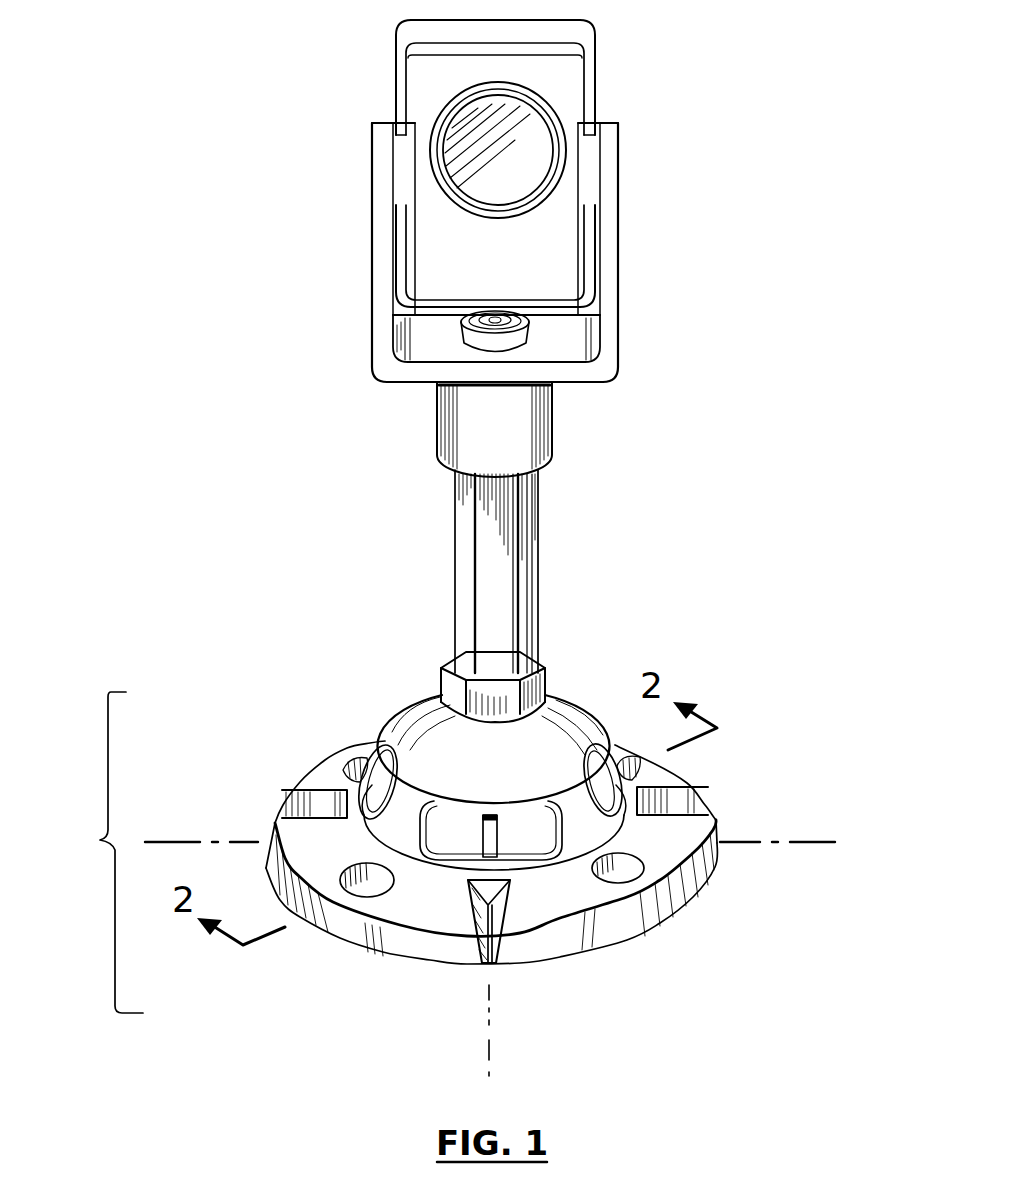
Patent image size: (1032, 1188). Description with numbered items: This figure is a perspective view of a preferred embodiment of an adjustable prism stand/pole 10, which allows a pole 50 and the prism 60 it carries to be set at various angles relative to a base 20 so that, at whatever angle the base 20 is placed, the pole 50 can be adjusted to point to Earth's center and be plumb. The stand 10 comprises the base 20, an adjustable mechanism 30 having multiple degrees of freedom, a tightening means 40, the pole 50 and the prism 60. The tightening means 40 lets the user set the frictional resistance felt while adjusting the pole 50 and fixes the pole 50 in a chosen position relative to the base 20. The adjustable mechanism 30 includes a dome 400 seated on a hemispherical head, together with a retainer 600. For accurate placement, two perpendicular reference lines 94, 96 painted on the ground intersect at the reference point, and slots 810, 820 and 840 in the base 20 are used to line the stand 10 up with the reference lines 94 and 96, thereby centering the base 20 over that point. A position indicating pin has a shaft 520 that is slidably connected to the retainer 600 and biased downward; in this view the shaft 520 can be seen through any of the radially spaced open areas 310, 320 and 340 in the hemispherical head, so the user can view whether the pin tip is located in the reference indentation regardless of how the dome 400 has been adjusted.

The adjustable prism stand/pole 10 is at (784, 285).
The base 20 is at (710, 838).
The adjustable mechanism 30 is at (100, 838).
The tightening means 40 is at (545, 680).
The pole 50 is at (537, 533).
The prism 60 is at (457, 118).
The reference line 94 is at (757, 841).
The reference line 96 is at (490, 1047).
The open area 310 is at (456, 840).
The open area 320 is at (375, 752).
The open area 340 is at (625, 757).
The dome 400 is at (423, 693).
The shaft 520 is at (497, 830).
The retainer 600 is at (480, 812).
The slot 810 is at (512, 925).
The slot 820 is at (290, 794).
The slot 840 is at (662, 832).